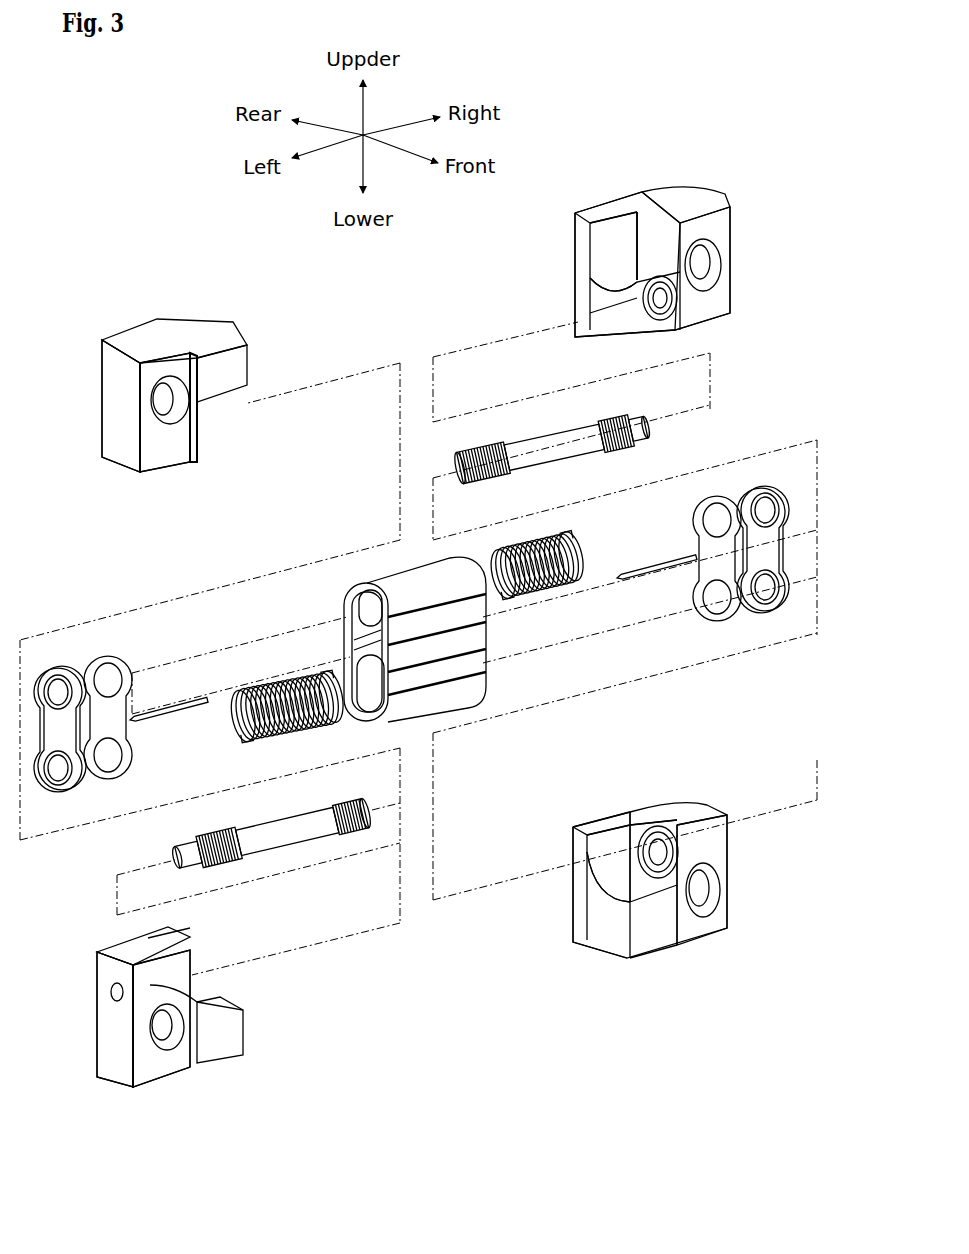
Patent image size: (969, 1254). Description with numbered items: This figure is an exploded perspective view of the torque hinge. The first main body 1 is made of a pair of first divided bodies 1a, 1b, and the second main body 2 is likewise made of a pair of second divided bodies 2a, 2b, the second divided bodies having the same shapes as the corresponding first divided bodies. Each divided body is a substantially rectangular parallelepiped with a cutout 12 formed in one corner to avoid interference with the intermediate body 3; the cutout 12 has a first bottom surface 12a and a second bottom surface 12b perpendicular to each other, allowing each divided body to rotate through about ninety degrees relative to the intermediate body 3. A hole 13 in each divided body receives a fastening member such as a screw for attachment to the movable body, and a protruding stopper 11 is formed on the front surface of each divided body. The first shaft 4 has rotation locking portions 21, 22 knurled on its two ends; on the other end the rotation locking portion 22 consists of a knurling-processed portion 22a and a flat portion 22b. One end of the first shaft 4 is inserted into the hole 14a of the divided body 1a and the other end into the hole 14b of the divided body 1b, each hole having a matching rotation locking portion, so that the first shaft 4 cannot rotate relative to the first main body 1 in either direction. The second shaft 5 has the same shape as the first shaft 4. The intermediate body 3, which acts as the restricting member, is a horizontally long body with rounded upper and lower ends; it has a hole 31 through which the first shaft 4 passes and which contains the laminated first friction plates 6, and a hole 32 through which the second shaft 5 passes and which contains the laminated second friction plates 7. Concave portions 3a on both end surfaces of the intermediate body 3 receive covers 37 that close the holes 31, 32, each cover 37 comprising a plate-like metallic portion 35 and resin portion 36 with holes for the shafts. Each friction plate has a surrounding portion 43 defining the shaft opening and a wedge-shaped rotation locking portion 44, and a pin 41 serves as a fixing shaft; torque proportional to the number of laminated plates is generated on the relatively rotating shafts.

The first main body 1 is at (416, 329).
The first divided body 1a is at (222, 323).
The first divided body 1b is at (578, 268).
The second main body 2 is at (412, 945).
The second divided body 2a is at (598, 945).
The second divided body 2b is at (180, 1068).
The intermediate body 3 is at (388, 560).
The concave portion 3a is at (352, 658).
The first shaft 4 is at (530, 418).
The second shaft 5 is at (287, 855).
The first friction plates 6 is at (540, 548).
The second friction plates 7 is at (272, 742).
The protruding stopper 11 is at (238, 372).
The cutout 12 is at (205, 424).
The first bottom surface 12a is at (613, 320).
The second bottom surface 12b is at (647, 323).
The hole 13 is at (168, 413).
The hole 14a is at (200, 405).
The hole 14b is at (677, 300).
The rotation locking portion 21 is at (485, 470).
The rotation locking portion 22 is at (356, 666).
The knurling-processed portion 22a is at (600, 435).
The flat portion 22b is at (645, 425).
The hole 31 is at (347, 607).
The hole 32 is at (382, 700).
The metallic portion 35 is at (705, 495).
The resin portion 36 is at (768, 490).
The cover 37 is at (421, 586).
The pin 41 is at (650, 580).
The surrounding portion 43 is at (497, 563).
The rotation locking portion 44 is at (493, 612).